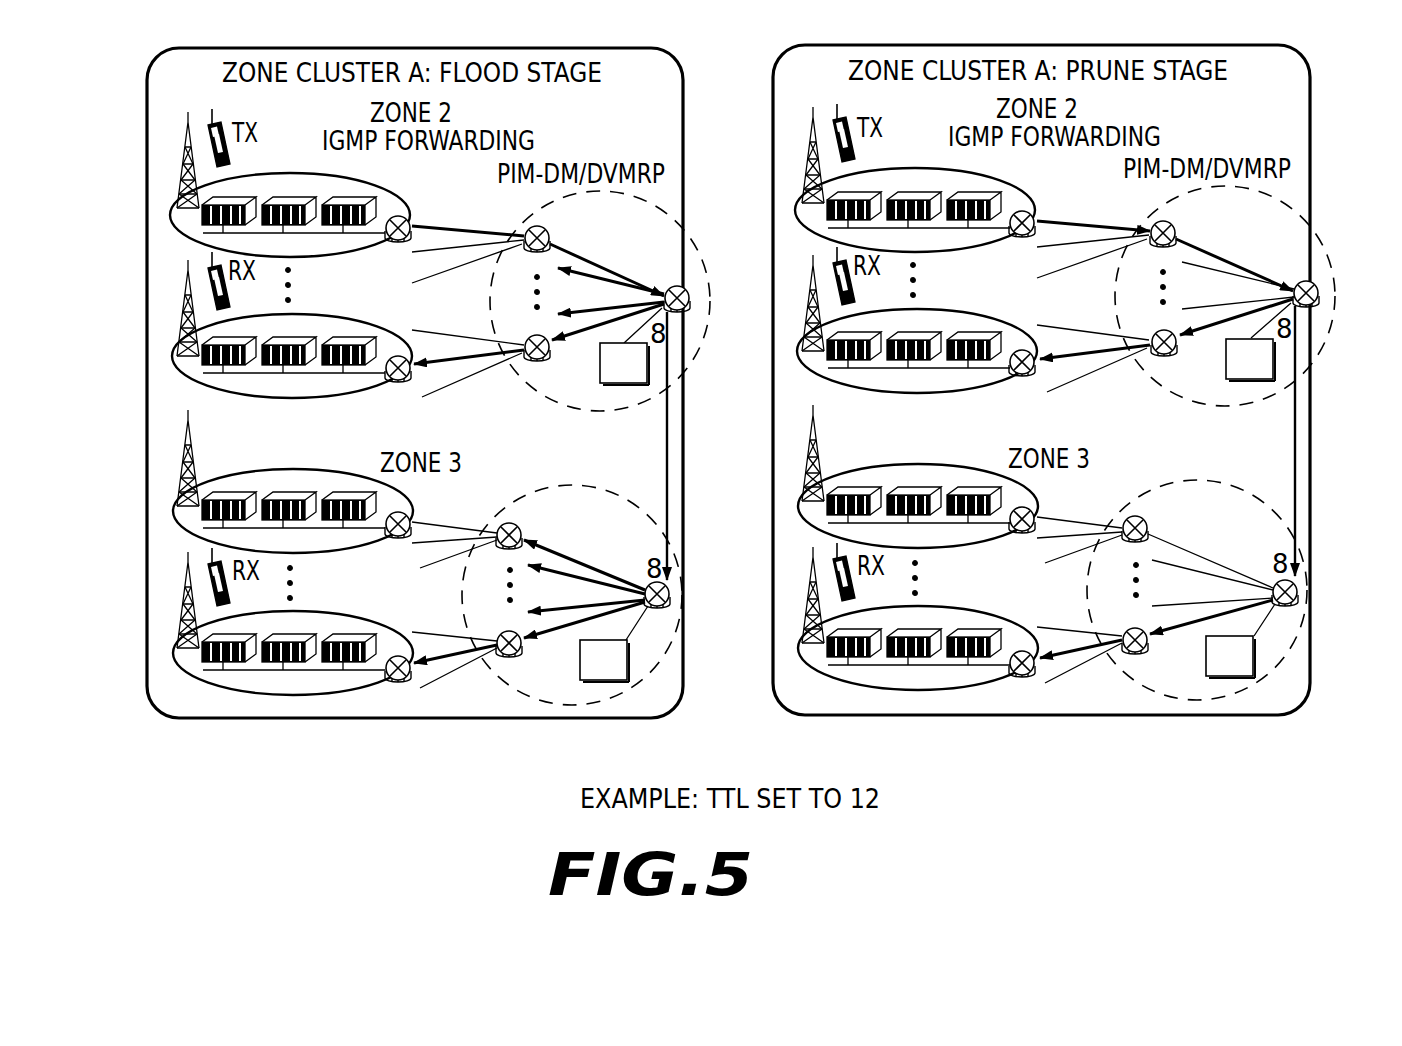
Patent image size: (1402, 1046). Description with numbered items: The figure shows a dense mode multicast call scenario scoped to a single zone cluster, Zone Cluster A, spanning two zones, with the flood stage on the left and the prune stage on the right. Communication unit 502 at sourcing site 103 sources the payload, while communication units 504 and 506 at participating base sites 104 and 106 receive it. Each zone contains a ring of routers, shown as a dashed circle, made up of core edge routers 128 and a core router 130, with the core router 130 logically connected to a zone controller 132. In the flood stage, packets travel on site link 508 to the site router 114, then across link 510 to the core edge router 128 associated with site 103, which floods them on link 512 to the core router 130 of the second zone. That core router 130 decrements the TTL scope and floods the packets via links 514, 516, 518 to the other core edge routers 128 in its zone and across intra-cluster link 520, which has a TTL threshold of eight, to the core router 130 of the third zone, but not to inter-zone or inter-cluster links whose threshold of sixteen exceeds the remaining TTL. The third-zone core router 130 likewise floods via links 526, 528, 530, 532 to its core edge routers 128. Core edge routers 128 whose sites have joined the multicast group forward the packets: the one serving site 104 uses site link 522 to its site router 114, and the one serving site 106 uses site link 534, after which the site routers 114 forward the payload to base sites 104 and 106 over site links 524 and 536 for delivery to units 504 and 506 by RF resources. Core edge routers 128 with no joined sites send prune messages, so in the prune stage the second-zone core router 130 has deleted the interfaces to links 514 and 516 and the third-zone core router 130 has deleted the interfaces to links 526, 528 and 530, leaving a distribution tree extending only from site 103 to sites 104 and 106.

The sourcing site 103 is at (173, 228).
The participating base site 104 is at (174, 366).
The participating base site 106 is at (174, 664).
The site router 114 is at (392, 242).
The core edge router 128 is at (551, 231).
The core router 130 is at (691, 296).
The zone controller 132 is at (612, 386).
The communication unit 502 is at (226, 154).
The communication unit 504 is at (226, 292).
The communication unit 506 is at (226, 590).
The site link 508 is at (312, 235).
The link 510 is at (446, 229).
The link 512 is at (608, 253).
The link 514 is at (614, 269).
The link 516 is at (612, 306).
The link 518 is at (592, 334).
The intra-cluster link 520 is at (665, 473).
The site link 522 is at (460, 352).
The site link 524 is at (303, 373).
The link 526 is at (562, 547).
The link 528 is at (584, 574).
The link 530 is at (586, 603).
The link 532 is at (566, 631).
The site link 534 is at (452, 648).
The site link 536 is at (305, 672).